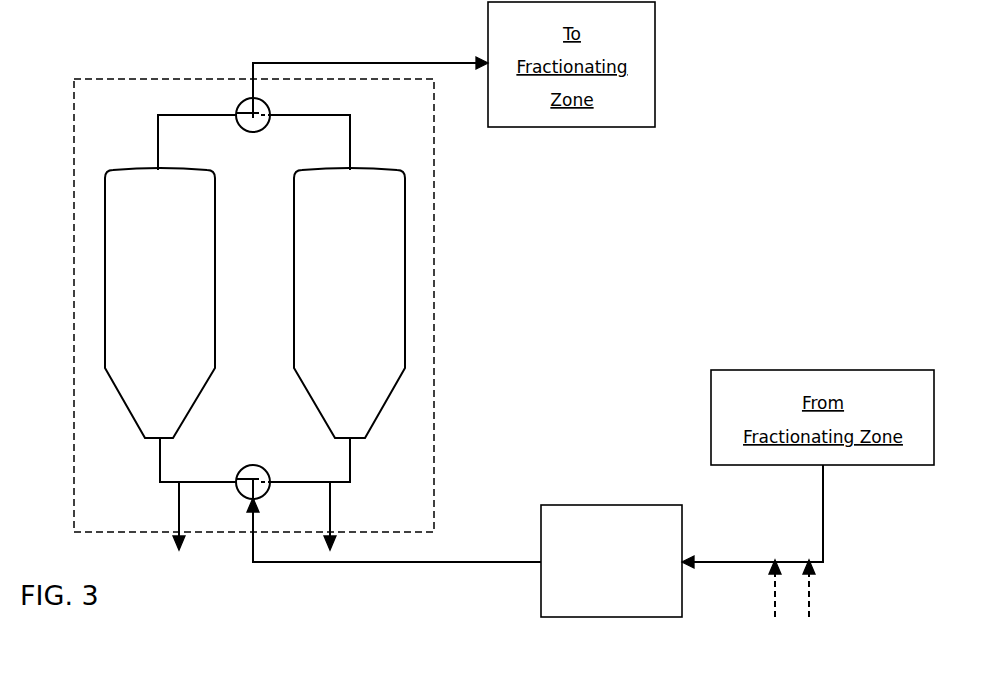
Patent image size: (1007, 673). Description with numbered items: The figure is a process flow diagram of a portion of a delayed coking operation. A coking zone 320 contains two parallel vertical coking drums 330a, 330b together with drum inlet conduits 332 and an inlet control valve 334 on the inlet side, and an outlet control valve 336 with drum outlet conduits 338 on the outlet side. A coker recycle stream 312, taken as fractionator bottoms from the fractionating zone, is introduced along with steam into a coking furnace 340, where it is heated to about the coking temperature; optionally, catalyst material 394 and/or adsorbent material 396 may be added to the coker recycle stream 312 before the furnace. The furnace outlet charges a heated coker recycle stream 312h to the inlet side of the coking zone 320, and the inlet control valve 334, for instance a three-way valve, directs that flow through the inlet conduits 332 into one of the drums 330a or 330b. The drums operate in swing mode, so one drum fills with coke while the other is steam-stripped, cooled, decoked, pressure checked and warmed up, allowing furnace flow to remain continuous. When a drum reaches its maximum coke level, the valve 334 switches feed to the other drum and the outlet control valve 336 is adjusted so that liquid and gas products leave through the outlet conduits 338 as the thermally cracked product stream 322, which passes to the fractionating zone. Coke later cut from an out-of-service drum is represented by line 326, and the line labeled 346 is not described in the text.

The coking zone 320 is at (74, 291).
The thermally cracked product stream 322 is at (328, 60).
The coking drum 330a is at (160, 303).
The coking drum 330b is at (349, 303).
The drum inlet conduits 332 is at (350, 462).
The inlet control valve 334 is at (263, 494).
The outlet control valve 336 is at (253, 132).
The drum outlet conduits 338 is at (158, 142).
The coking furnace 340 is at (611, 561).
The inlet line to vessel 330a 346 is at (160, 462).
The coke removal line 326 is at (179, 510).
The coker recycle stream 312 is at (823, 500).
The heated coker recycle stream 312h is at (374, 564).
The catalyst material 394 is at (774, 590).
The adsorbent material 396 is at (810, 590).